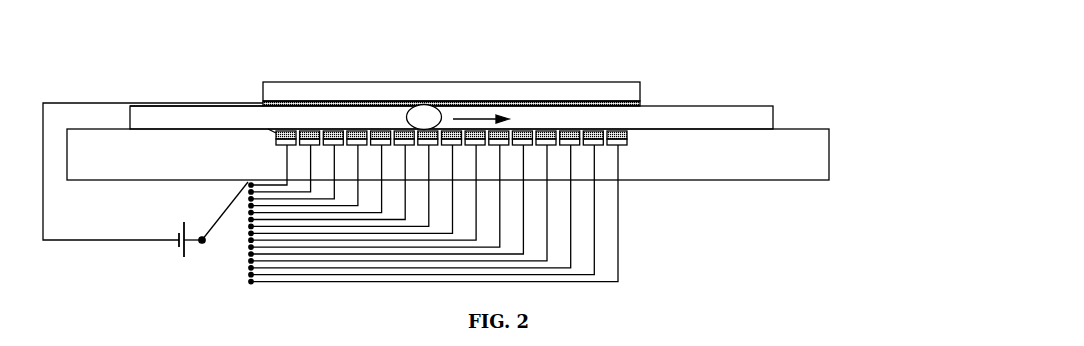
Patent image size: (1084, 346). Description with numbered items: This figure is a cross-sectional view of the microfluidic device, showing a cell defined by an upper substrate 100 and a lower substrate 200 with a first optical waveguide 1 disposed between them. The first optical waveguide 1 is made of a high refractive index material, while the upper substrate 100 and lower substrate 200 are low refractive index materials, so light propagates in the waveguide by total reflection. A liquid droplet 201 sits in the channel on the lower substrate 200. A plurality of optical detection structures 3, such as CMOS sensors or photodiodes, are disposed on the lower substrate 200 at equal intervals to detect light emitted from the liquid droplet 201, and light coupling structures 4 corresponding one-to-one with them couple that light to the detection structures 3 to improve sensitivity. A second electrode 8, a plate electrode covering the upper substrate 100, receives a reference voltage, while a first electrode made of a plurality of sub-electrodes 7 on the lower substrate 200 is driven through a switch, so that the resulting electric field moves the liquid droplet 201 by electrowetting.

The upper substrate 100 is at (622, 90).
The first optical waveguide 1 is at (773, 115).
The lower substrate 200 is at (810, 153).
The liquid droplet 201 is at (408, 103).
The optical detection structure 3 is at (388, 103).
The light coupling structure 4 is at (343, 103).
The sub-electrode 7 is at (217, 106).
The second electrode 8 is at (263, 102).